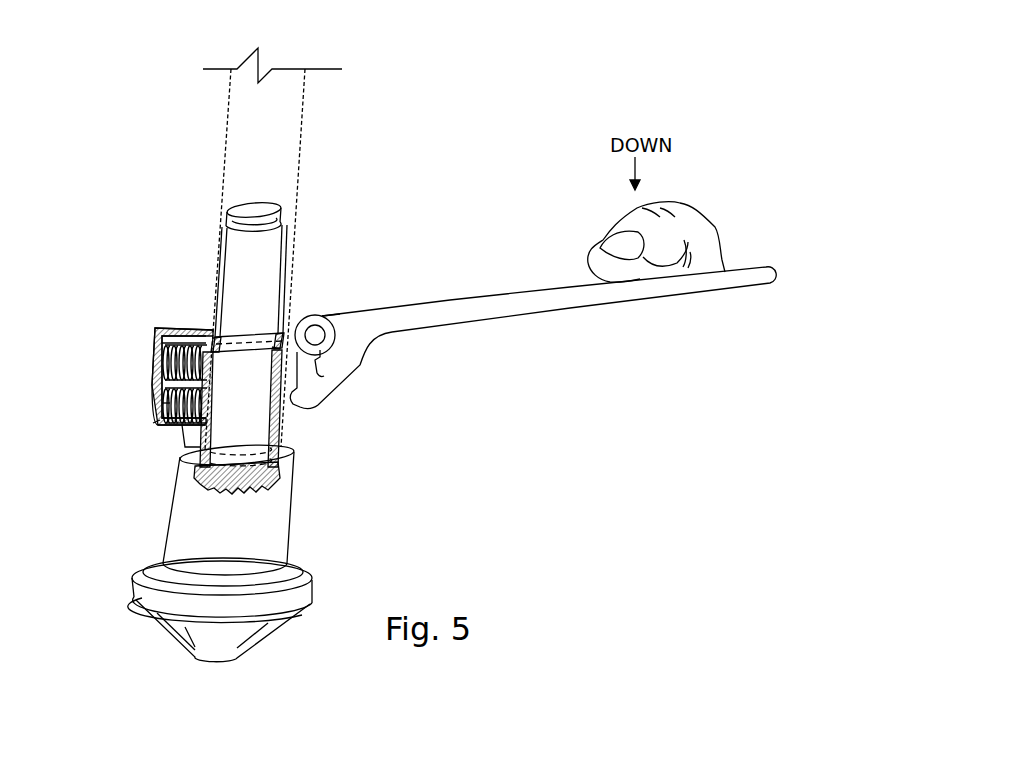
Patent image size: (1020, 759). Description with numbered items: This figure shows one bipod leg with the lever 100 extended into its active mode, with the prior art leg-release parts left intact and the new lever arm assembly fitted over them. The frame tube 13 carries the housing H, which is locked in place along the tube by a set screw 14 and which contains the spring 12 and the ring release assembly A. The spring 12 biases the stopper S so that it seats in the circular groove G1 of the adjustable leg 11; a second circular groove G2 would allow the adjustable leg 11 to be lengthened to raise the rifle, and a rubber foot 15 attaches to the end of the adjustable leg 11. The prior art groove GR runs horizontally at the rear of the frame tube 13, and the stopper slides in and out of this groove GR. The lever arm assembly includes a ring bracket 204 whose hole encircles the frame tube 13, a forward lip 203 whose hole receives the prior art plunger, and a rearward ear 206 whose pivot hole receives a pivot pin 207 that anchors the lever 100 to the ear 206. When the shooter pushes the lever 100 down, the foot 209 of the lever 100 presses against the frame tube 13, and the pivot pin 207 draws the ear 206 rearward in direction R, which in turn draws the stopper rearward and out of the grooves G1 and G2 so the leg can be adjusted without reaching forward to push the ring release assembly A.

The adjustable leg 11 is at (295, 332).
The spring 12 is at (202, 367).
The frame tube 13 is at (248, 130).
The set screw 14 is at (192, 405).
The foot 15 is at (293, 490).
The lever 100 is at (497, 300).
The forward lip 203 is at (155, 343).
The ring bracket 204 is at (190, 332).
The rearward ear 206 is at (337, 314).
The pivot pin 207 is at (320, 338).
The foot of lever 209 is at (375, 365).
The circular groove G1 is at (272, 347).
The circular groove G2 is at (273, 215).
The groove GR is at (280, 337).
The stopper S is at (282, 335).
The direction R is at (138, 362).
The housing H is at (167, 403).
The ring release assembly A is at (153, 425).